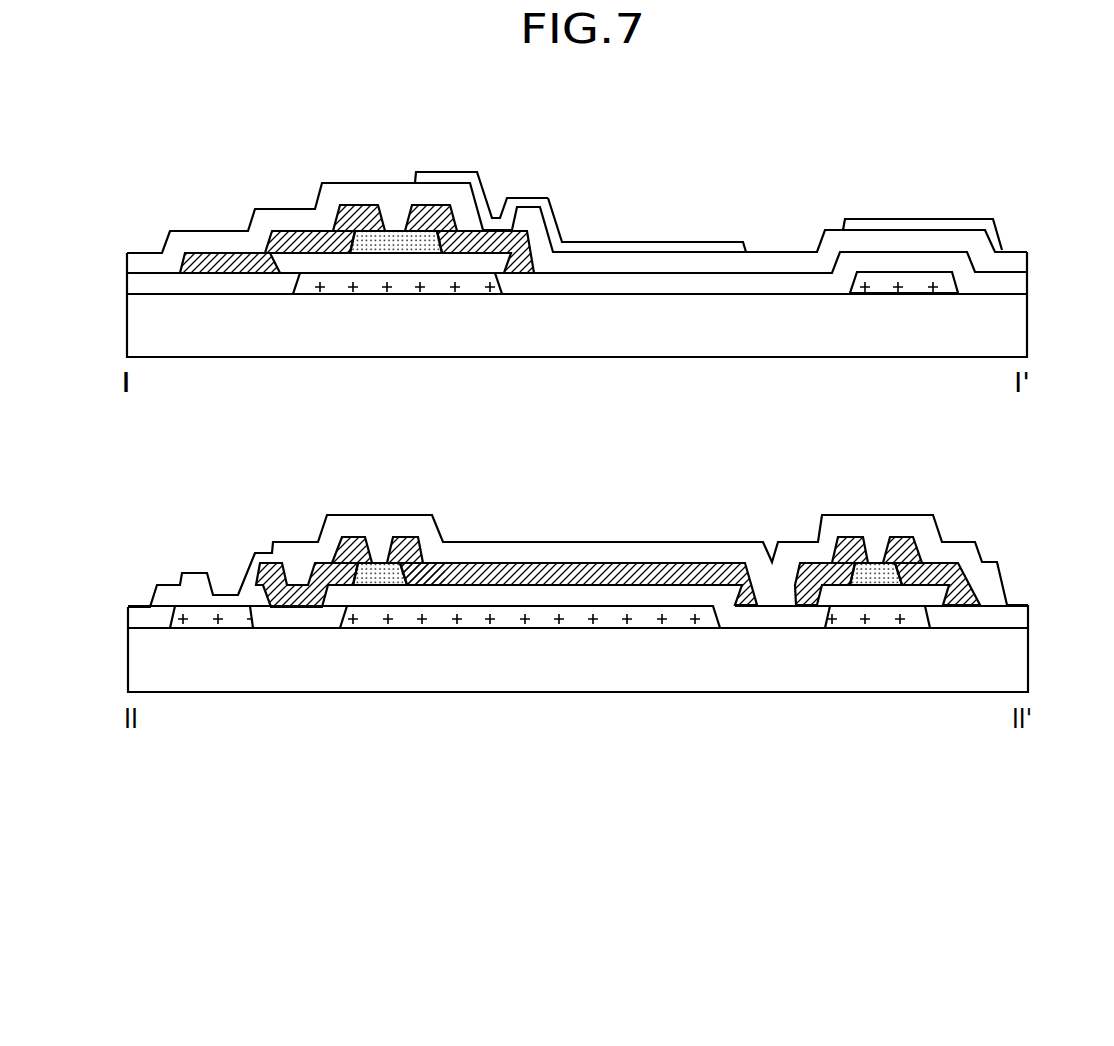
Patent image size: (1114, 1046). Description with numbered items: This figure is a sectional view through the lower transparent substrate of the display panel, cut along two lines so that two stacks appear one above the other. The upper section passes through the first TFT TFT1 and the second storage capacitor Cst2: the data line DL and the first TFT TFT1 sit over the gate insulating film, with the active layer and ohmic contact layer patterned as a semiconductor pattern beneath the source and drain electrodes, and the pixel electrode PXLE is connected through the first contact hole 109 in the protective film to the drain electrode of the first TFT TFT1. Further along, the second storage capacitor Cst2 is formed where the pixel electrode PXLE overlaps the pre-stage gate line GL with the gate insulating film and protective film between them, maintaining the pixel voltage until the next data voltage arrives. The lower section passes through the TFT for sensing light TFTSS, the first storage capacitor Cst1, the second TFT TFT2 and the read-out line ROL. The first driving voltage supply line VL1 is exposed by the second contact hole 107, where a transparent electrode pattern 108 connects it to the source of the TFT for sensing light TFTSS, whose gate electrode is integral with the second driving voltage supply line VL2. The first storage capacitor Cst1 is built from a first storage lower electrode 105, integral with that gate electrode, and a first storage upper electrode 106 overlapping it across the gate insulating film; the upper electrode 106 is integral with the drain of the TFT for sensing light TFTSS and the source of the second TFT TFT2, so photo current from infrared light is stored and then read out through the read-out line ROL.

The first storage lower electrode 105 is at (595, 620).
The first storage upper electrode 106 is at (565, 575).
The second contact hole 107 is at (227, 582).
The transparent electrode pattern 108 is at (257, 553).
The first contact hole 109 is at (498, 203).
The gate line GL is at (922, 290).
The data line DL is at (238, 265).
The pixel electrode PXLE is at (548, 200).
The first TFT TFT1 is at (439, 154).
The second TFT TFT2 is at (892, 619).
The TFT for sensing light TFTSS is at (348, 618).
The first storage capacitor Cst1 is at (548, 607).
The second storage capacitor Cst2 is at (959, 190).
The first driving voltage supply line VL1 is at (225, 620).
The second driving voltage supply line VL2 is at (330, 612).
The read-out line ROL is at (998, 582).